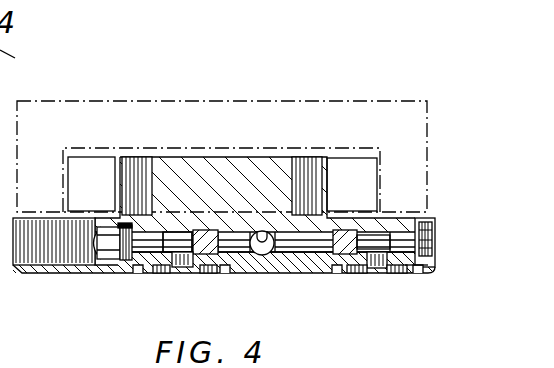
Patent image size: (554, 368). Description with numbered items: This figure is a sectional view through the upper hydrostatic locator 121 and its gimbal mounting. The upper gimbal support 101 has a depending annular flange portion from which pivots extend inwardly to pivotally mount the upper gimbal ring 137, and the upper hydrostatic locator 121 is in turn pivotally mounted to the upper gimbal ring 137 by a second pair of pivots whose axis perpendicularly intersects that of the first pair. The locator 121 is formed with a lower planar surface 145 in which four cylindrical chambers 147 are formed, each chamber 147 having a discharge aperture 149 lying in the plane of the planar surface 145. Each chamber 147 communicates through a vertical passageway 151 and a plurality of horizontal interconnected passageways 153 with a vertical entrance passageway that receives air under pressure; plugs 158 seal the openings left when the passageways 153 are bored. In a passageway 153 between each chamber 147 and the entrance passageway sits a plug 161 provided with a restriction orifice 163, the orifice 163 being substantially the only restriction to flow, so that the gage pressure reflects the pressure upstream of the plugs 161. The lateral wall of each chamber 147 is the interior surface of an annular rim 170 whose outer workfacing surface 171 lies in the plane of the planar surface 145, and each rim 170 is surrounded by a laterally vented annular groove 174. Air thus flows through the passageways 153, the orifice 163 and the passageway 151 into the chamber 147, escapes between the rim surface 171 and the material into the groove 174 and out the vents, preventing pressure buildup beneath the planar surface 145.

The upper gimbal support 101 is at (241, 101).
The upper gimbal ring 137 is at (92, 156).
The lower planar surface 145 is at (302, 273).
The upper hydrostatic locator 121 is at (58, 275).
The horizontal interconnected passageways 153 is at (288, 240).
The plug 161 is at (212, 242).
The restriction orifice 163 is at (190, 238).
The plugs 158 is at (128, 228).
The vertical passageway 151 is at (180, 256).
The discharge aperture 149 is at (156, 272).
The cylindrical chamber 147 is at (202, 272).
The annular groove 174 is at (227, 274).
The annular rim 170 is at (140, 270).
The outer workfacing surface 171 is at (412, 277).